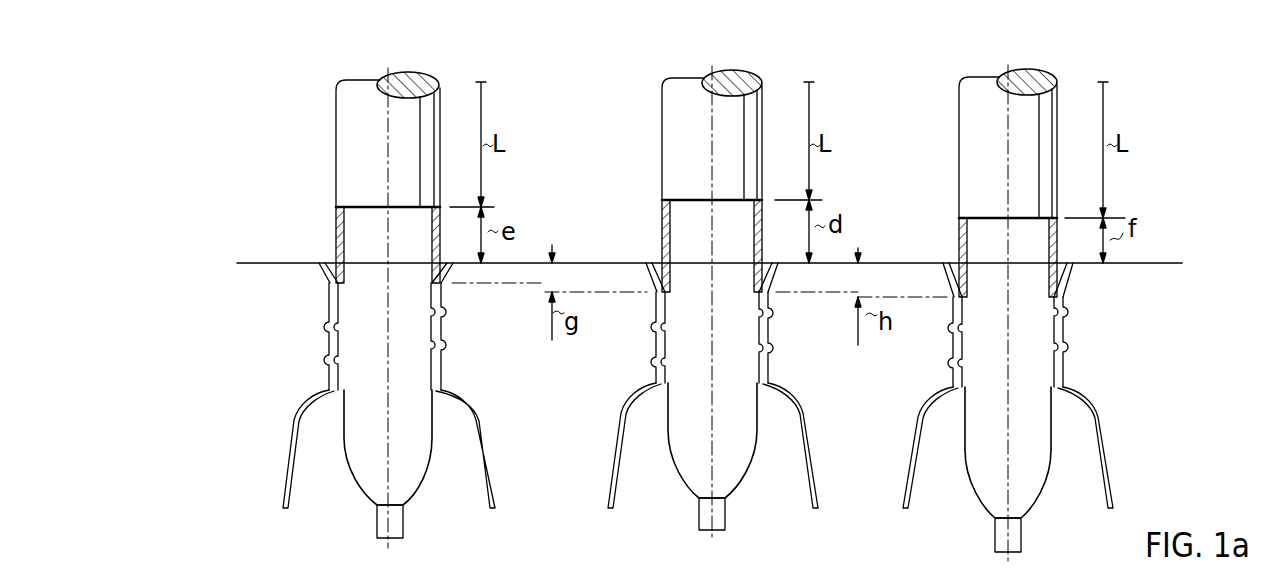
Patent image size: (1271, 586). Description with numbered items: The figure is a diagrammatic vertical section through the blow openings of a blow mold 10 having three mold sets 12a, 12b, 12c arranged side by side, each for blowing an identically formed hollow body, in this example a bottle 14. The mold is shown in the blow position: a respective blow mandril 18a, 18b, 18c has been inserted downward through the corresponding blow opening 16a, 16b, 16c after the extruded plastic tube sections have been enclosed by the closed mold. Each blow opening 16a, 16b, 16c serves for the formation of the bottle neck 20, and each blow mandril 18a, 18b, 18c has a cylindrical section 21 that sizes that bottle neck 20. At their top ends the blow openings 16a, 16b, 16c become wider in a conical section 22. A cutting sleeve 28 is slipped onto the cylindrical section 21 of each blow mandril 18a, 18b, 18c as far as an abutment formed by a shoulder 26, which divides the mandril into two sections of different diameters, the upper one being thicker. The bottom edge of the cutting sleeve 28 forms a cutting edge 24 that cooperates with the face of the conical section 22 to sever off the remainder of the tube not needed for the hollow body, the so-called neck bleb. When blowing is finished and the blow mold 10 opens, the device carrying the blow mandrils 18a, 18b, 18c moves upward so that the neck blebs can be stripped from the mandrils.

The blow mold 10 is at (556, 426).
The mold set 12a is at (1095, 506).
The mold set 12b is at (792, 506).
The mold set 12c is at (468, 506).
The bottle 14 is at (922, 458).
The blow opening 16a is at (936, 235).
The blow opening 16b is at (639, 238).
The blow opening 16c is at (320, 235).
The blow mandril 18a is at (1035, 76).
The blow mandril 18b is at (740, 76).
The blow mandril 18c is at (418, 78).
The bottle neck 20 is at (767, 327).
The cylindrical section 21 is at (1041, 316).
The conical section 22 is at (1068, 288).
The cutting edge 24 is at (340, 285).
The shoulder 26 is at (362, 205).
The cutting sleeve 28 is at (338, 252).